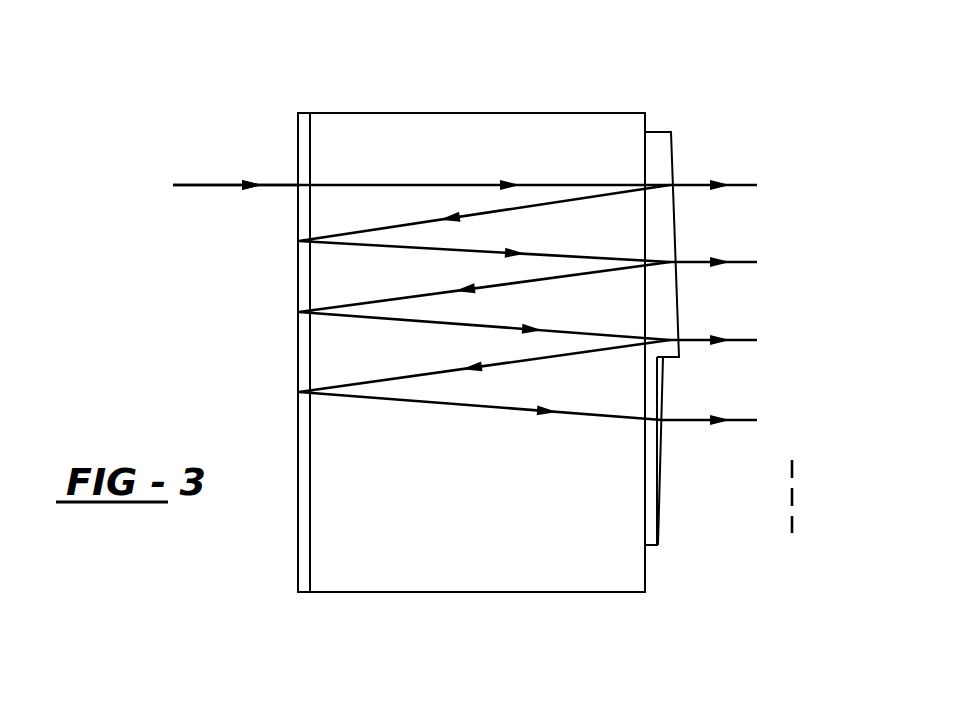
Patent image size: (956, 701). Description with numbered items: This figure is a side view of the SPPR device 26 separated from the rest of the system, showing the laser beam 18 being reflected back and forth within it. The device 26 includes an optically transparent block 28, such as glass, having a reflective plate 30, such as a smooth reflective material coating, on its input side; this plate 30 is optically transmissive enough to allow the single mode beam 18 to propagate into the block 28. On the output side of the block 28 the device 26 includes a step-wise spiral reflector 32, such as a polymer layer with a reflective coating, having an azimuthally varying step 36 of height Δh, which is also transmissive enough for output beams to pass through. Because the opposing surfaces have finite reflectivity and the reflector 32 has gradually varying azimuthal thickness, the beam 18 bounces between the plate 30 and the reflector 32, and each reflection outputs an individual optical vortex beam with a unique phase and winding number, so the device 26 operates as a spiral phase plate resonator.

The single mode beam 18 is at (208, 183).
The SPPR device 26 is at (603, 78).
The optically transparent block 28 is at (403, 128).
The reflective plate 30 is at (305, 460).
The step-wise spiral reflector 32 is at (663, 224).
The azimuthally varying step 36 is at (668, 358).